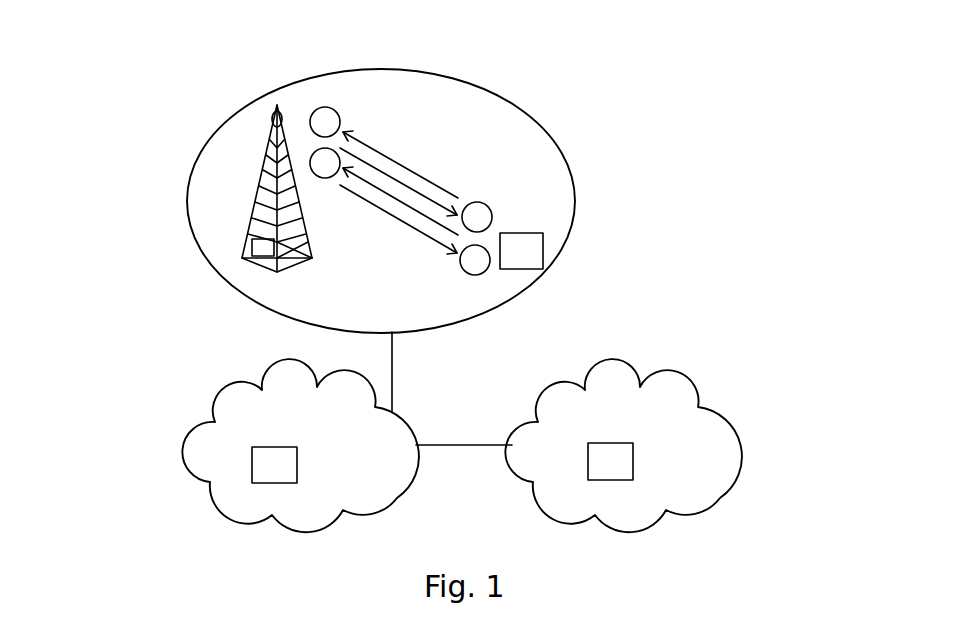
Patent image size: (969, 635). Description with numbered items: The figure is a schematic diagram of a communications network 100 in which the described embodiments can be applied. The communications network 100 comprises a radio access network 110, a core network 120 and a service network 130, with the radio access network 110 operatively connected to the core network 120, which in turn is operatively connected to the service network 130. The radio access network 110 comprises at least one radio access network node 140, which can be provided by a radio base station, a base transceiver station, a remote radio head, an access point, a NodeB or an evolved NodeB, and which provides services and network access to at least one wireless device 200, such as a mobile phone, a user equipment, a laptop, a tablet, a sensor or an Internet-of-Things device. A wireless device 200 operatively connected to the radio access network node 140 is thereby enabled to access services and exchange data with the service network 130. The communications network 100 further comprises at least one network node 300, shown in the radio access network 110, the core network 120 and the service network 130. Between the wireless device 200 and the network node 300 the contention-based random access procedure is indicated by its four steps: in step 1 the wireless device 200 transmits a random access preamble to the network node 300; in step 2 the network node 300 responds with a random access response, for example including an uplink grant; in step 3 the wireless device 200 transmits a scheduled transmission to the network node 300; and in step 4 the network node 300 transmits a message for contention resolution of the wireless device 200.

The communications network 100 is at (705, 97).
The radio access network 110 is at (233, 288).
The core network 120 is at (276, 427).
The service network 130 is at (616, 427).
The radio access network node 140 is at (268, 127).
The wireless device 200 is at (530, 250).
The network node 300 is at (247, 255).
The step 1 of the random access procedure 1 is at (384, 152).
The step 2 of the random access procedure 2 is at (416, 190).
The step 3 of the random access procedure 3 is at (384, 191).
The step 4 of the random access procedure 4 is at (415, 230).